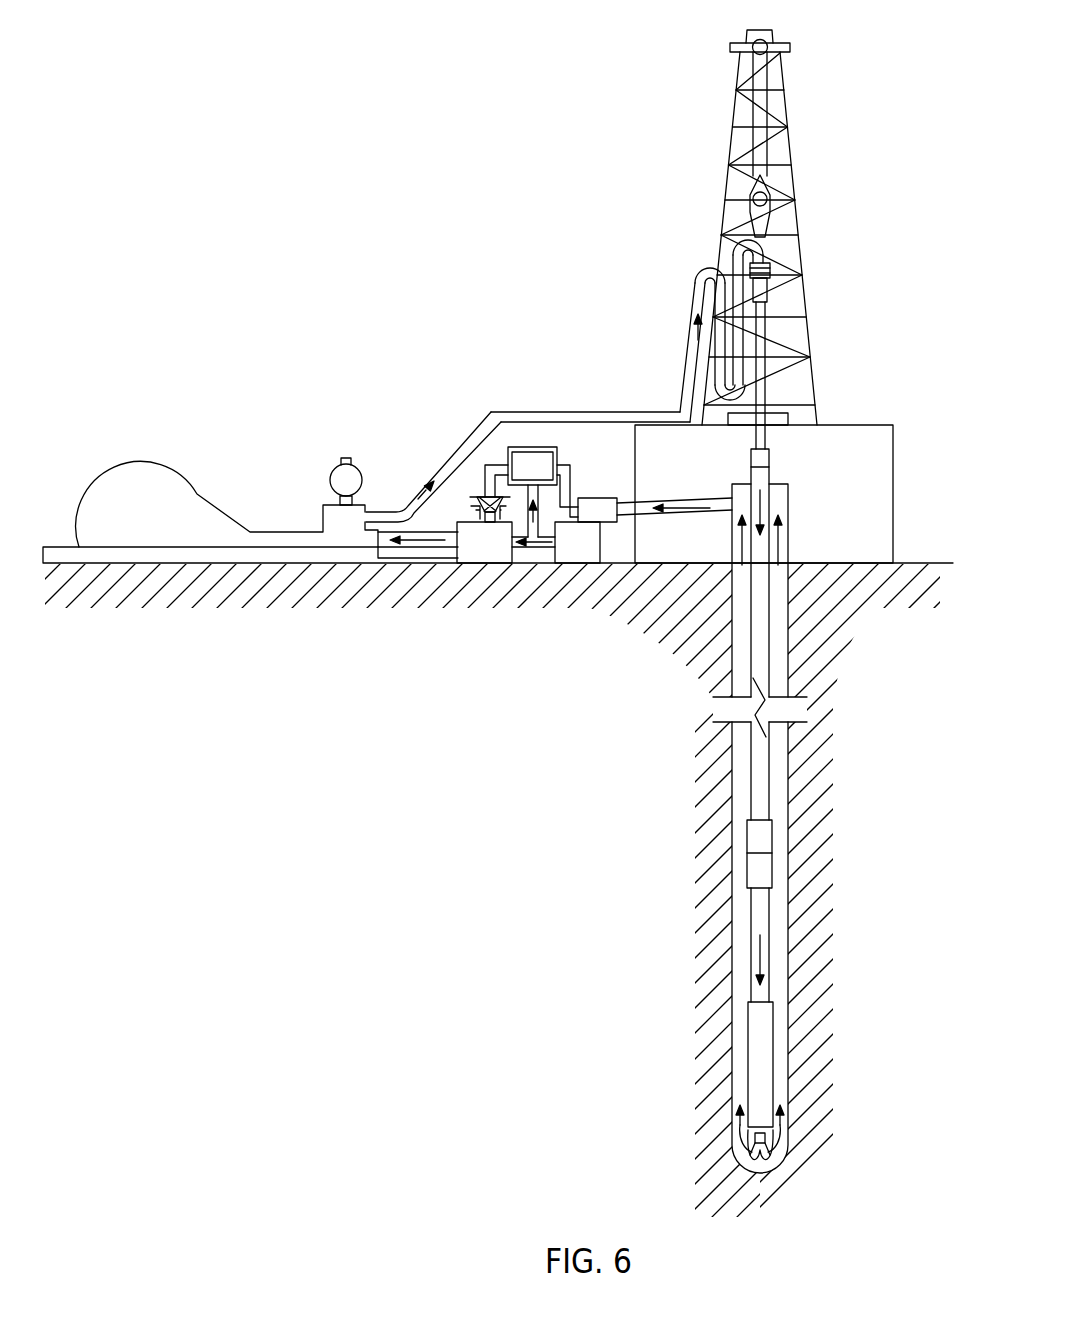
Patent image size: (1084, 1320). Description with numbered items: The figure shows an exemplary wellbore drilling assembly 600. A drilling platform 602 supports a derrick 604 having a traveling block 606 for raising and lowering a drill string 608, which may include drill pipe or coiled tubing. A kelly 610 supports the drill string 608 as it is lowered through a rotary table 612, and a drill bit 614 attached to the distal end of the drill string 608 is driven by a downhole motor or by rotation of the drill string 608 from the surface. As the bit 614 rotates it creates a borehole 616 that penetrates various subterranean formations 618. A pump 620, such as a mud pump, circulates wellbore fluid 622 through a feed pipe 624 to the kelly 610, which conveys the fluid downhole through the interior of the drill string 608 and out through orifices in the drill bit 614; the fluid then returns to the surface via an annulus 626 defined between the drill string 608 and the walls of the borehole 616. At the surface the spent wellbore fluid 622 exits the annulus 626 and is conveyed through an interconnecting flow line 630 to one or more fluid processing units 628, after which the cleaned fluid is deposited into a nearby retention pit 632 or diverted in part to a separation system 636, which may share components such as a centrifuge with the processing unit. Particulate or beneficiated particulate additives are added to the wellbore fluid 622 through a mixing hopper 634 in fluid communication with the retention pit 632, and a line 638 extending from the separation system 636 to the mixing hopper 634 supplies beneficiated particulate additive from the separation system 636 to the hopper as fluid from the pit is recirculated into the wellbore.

The drilling assembly 600 is at (457, 123).
The drilling platform 602 is at (893, 437).
The derrick 604 is at (793, 143).
The traveling block 606 is at (779, 186).
The drill string 608 is at (762, 648).
The kelly 610 is at (762, 321).
The rotary table 612 is at (790, 421).
The drill bit 614 is at (786, 1130).
The borehole 616 is at (788, 778).
The subterranean formations 618 is at (611, 871).
The pump 620 is at (148, 524).
The wellbore fluid 622 is at (392, 513).
The feed pipe 624 is at (500, 411).
The annulus 626 is at (777, 952).
The fluid processing unit 628 is at (596, 499).
The interconnecting flow line 630 is at (712, 514).
The retention pit 632 is at (578, 556).
The mixing hopper 634 is at (487, 510).
The separation system 636 is at (548, 477).
The supply line 638 is at (496, 465).